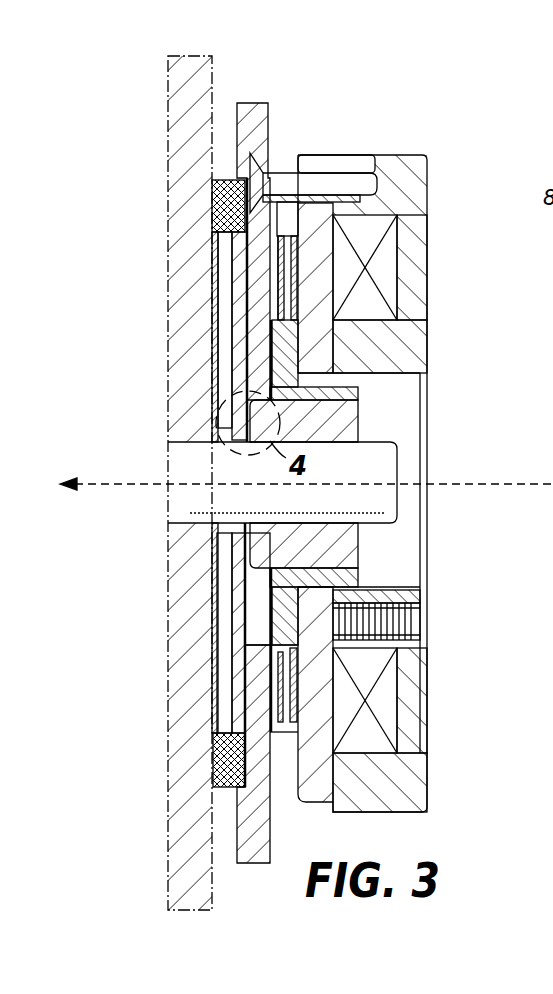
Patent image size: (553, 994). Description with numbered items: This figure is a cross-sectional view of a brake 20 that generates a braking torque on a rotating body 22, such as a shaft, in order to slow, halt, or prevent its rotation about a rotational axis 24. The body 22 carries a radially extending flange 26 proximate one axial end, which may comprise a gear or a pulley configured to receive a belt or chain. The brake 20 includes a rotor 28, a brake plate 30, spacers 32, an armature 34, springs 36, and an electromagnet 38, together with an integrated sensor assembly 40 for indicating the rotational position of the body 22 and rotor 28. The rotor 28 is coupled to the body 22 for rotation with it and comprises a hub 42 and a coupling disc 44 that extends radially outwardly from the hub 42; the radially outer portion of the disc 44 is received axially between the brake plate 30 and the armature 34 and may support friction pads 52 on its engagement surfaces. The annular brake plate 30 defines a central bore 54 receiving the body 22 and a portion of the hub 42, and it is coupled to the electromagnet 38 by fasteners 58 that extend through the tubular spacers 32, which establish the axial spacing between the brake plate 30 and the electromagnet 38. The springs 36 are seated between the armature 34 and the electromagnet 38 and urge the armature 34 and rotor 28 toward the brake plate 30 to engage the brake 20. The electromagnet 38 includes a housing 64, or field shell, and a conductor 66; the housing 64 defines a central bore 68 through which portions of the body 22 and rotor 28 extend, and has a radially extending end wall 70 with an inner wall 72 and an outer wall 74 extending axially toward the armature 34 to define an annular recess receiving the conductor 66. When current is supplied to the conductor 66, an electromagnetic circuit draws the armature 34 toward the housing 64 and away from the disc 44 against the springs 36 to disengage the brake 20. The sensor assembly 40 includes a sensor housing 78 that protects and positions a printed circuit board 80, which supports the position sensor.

The brake 20 is at (124, 156).
The rotating body 22 is at (378, 505).
The rotational axis 24 is at (101, 486).
The radially extending flange 26 is at (178, 762).
The rotor 28 is at (258, 378).
The brake plate 30 is at (262, 112).
The spacers 32 is at (283, 172).
The armature 34 is at (323, 215).
The springs 36 is at (395, 625).
The electromagnet 38 is at (428, 178).
The sensor assembly 40 is at (212, 388).
The hub 42 is at (352, 421).
The coupling disc 44 is at (358, 388).
The friction pads 52 is at (270, 685).
The central bore 54 is at (258, 600).
The fasteners 58 is at (317, 185).
The housing 64 is at (411, 296).
The conductor 66 is at (385, 265).
The central bore 68 is at (400, 572).
The end wall 70 is at (410, 717).
The inner wall 72 is at (404, 356).
The outer wall 74 is at (405, 794).
The sensor housing 78 is at (218, 770).
The printed circuit board 80 is at (235, 705).